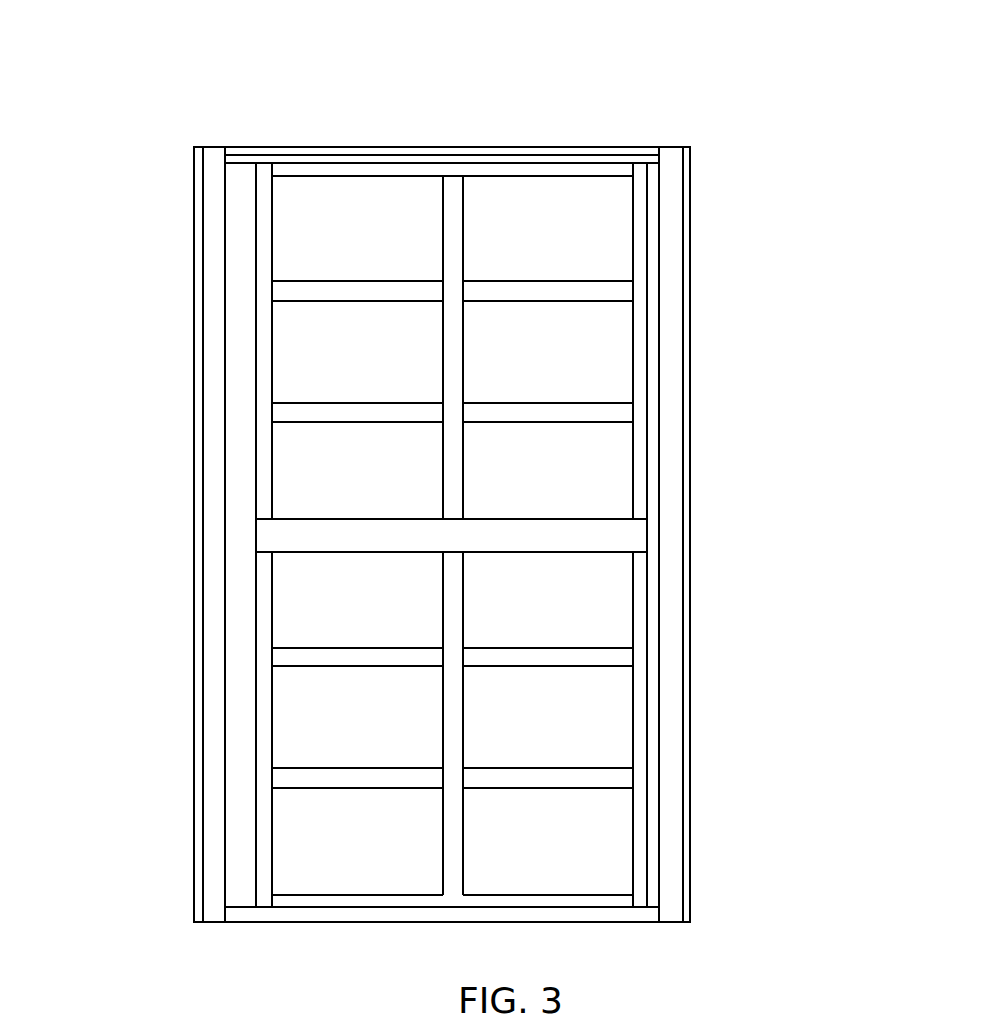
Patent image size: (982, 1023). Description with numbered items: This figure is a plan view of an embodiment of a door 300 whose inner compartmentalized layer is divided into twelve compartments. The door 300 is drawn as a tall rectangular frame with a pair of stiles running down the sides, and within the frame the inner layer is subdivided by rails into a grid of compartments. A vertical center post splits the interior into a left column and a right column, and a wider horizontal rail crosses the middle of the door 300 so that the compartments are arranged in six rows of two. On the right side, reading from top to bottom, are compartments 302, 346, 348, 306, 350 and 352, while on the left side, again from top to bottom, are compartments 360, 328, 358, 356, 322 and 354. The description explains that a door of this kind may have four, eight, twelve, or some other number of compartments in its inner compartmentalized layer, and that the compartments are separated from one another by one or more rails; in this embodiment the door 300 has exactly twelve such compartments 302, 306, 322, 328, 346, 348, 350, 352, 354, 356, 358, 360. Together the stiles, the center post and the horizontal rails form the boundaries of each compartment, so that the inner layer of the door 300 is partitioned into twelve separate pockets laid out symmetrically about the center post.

The door 300 is at (460, 71).
The compartment 302 is at (588, 242).
The compartment 306 is at (597, 613).
The compartment 322 is at (292, 690).
The compartment 328 is at (303, 318).
The compartment 346 is at (601, 355).
The compartment 348 is at (592, 468).
The compartment 350 is at (612, 730).
The compartment 352 is at (620, 828).
The compartment 354 is at (292, 827).
The compartment 356 is at (283, 592).
The compartment 358 is at (292, 483).
The compartment 360 is at (312, 201).